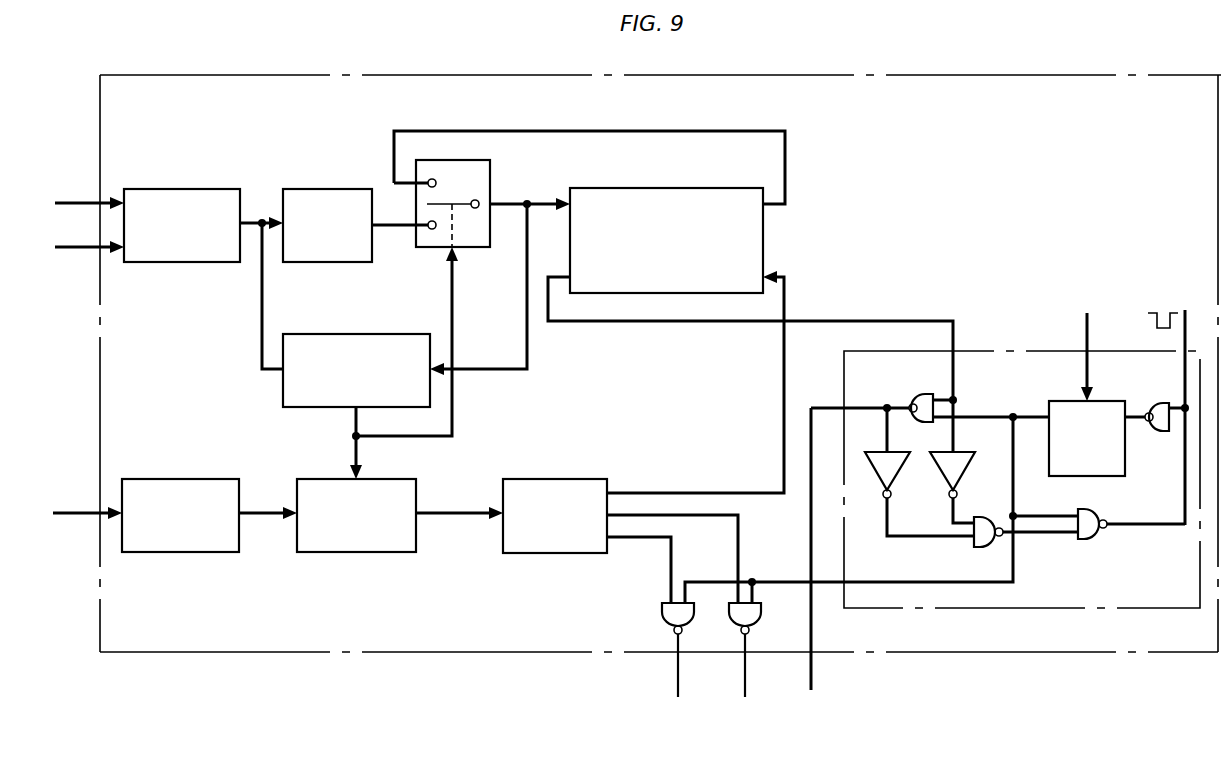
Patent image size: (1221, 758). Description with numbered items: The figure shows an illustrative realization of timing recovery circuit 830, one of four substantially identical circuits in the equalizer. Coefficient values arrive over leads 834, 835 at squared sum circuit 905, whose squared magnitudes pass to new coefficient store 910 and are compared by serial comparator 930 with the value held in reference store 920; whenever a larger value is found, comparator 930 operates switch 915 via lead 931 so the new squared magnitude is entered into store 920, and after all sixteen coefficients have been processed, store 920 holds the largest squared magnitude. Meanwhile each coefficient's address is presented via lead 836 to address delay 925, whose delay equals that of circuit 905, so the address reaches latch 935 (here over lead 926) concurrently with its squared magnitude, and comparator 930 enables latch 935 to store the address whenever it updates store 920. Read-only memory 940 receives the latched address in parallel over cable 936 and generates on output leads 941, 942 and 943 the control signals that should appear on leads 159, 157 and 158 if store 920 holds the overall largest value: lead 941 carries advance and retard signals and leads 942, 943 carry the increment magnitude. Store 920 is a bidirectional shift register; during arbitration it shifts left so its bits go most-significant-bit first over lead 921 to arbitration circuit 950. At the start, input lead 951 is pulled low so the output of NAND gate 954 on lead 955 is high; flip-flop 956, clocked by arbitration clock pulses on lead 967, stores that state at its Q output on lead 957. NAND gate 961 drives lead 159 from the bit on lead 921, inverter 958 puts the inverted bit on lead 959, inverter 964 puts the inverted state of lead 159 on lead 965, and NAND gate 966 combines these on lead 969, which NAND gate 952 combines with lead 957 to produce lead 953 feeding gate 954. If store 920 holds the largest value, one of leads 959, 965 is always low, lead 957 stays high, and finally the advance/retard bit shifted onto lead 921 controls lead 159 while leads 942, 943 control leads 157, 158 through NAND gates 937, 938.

The timing recovery circuit 830 is at (1012, 75).
The lead 834 is at (79, 203).
The lead 835 is at (90, 246).
The lead 836 is at (57, 524).
The squared sum circuit 905 is at (172, 189).
The new coefficient store 910 is at (316, 189).
The switch 915 is at (492, 167).
The reference store 920 is at (664, 188).
The lead 921 is at (858, 321).
The address delay 925 is at (163, 479).
The output line 926 is at (247, 524).
The serial comparator 930 is at (354, 334).
The lead 931 is at (352, 427).
The latch 935 is at (383, 552).
The cable 936 is at (435, 523).
The NAND gate 937 is at (659, 606).
The NAND gate 938 is at (763, 606).
The read-only memory (ROM) 940 is at (546, 479).
The output lead 941 is at (668, 493).
The output lead 942 is at (674, 554).
The output lead 943 is at (740, 532).
The arbitration circuit 950 is at (1120, 608).
The input lead 951 is at (1188, 340).
The NAND gate 952 is at (1090, 540).
The lead 953 is at (1130, 534).
The NAND gate 954 is at (1158, 432).
The lead 955 is at (1143, 410).
The D-type flip-flop 956 is at (1083, 476).
The lead 957 is at (1025, 415).
The inverter 958 is at (959, 478).
The lead 959 is at (950, 519).
The NAND gate 961 is at (930, 392).
The inverter 964 is at (893, 482).
The lead 965 is at (886, 509).
The NAND gate 966 is at (982, 548).
The lead 967 is at (1085, 330).
The lead 969 is at (1068, 536).
The lead 157 is at (676, 676).
The lead 158 is at (743, 676).
The lead 159 is at (814, 676).